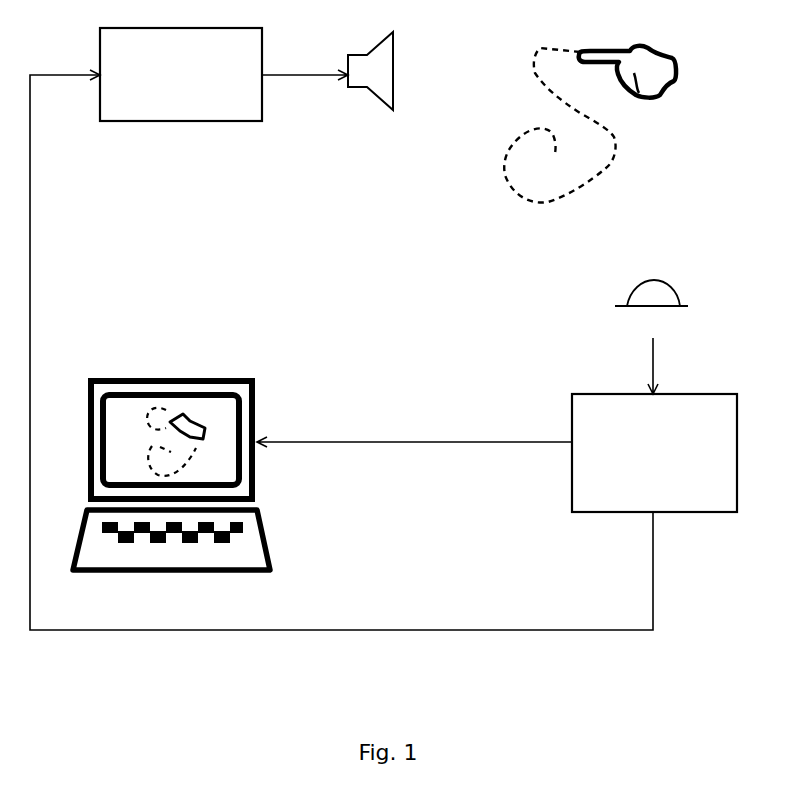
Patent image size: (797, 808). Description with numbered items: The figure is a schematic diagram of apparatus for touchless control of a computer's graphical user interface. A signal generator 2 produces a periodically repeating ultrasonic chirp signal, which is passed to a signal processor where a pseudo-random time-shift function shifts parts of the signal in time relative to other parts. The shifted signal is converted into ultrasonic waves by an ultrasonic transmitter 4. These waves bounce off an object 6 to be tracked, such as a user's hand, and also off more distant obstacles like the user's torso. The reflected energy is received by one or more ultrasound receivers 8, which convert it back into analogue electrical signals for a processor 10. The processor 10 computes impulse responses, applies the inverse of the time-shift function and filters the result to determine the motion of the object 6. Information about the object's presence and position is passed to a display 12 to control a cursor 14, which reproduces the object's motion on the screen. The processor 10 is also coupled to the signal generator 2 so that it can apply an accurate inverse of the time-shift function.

The signal generator 2 is at (174, 87).
The ultrasonic transmitter 4 is at (374, 100).
The object 6 is at (641, 97).
The ultrasound receiver 8 is at (667, 285).
The processor 10 is at (633, 455).
The display 12 is at (227, 448).
The cursor 14 is at (193, 417).